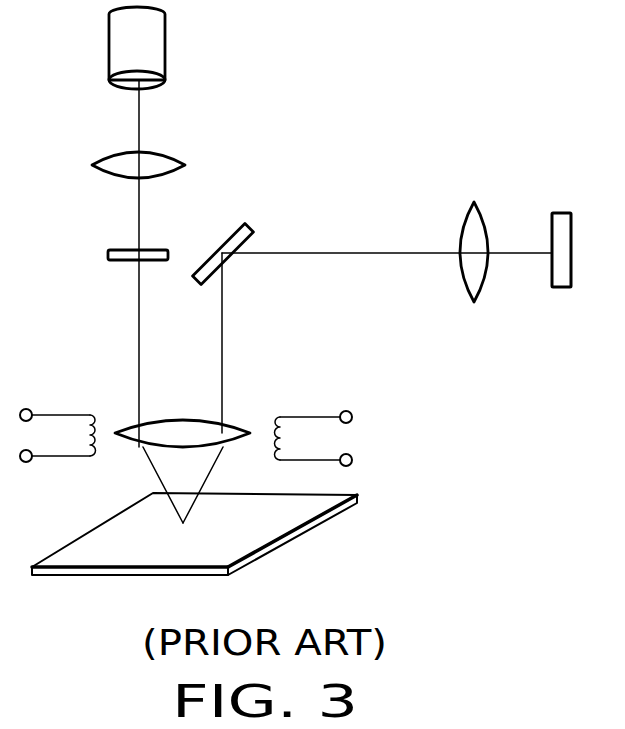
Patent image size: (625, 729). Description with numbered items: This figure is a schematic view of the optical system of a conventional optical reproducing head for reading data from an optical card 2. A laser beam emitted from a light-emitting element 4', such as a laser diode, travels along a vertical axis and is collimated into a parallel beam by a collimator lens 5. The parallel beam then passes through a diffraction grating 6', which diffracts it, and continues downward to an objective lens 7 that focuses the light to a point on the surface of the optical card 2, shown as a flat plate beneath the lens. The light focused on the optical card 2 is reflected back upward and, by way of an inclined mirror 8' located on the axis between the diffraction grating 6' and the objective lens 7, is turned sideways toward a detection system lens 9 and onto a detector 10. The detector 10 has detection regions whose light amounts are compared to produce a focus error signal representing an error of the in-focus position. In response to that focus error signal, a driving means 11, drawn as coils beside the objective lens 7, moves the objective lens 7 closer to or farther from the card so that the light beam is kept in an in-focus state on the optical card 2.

The light-emitting element 4' is at (162, 48).
The collimator lens 5 is at (172, 157).
The diffraction grating 6' is at (147, 227).
The mirror 8' is at (241, 229).
The detection system lens 9 is at (485, 223).
The detector 10 is at (571, 227).
The objective lens 7 is at (237, 424).
The driving means 11 is at (308, 417).
The optical card 2 is at (357, 503).